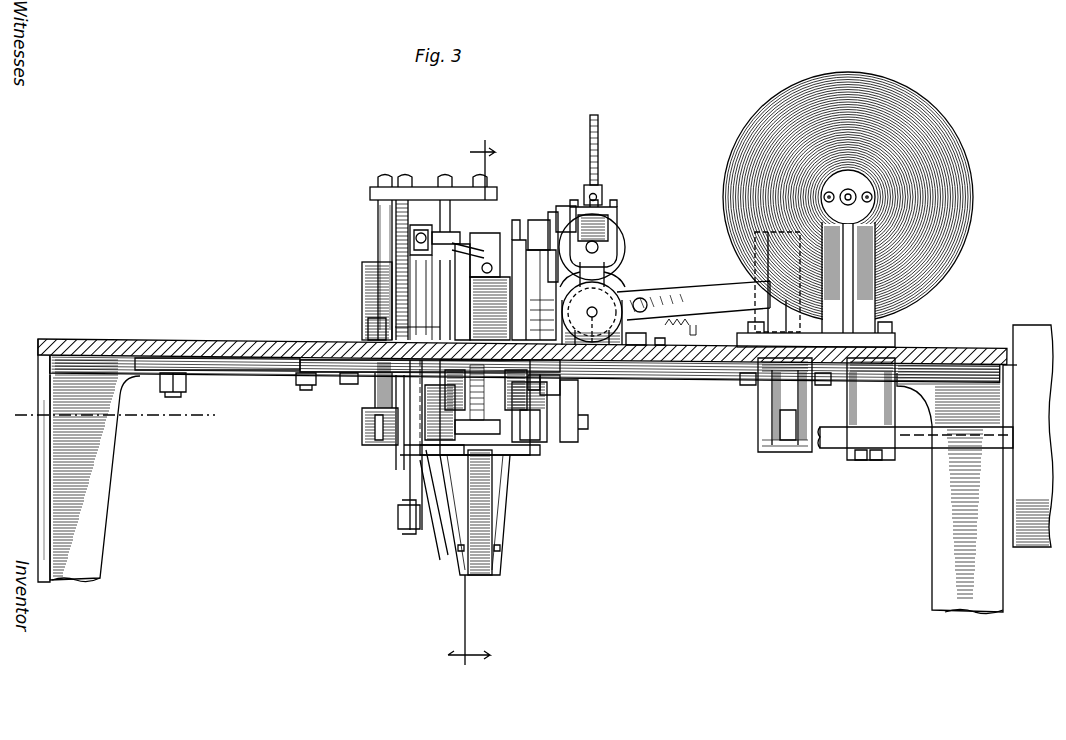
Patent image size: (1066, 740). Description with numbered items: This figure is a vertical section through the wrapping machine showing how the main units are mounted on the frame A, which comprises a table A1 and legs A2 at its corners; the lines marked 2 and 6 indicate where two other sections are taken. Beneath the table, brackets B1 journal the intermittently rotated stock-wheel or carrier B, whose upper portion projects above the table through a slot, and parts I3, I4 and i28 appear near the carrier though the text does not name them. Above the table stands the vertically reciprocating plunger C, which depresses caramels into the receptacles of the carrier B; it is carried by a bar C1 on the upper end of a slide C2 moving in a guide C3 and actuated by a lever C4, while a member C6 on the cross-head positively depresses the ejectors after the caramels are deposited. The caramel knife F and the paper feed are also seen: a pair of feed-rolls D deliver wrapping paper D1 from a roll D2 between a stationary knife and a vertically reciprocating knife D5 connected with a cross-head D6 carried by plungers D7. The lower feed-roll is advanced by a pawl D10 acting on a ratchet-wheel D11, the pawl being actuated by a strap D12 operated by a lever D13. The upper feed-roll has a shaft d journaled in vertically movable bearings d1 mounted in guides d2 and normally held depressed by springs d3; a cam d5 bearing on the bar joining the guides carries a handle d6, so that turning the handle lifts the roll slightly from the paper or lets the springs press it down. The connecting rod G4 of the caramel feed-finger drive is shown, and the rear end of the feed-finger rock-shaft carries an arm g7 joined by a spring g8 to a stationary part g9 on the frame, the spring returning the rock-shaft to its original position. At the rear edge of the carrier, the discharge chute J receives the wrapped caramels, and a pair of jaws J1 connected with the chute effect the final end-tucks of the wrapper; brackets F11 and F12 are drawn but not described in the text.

The frame A is at (35, 338).
The table A1 is at (205, 345).
The legs A2 is at (38, 458).
The section line 2 is at (18, 430).
The section line 6 is at (471, 407).
The rod I3 is at (248, 372).
The bolt I4 is at (306, 386).
The plunger C is at (495, 255).
The bar C1 is at (418, 190).
The slide C2 is at (376, 250).
The guide C3 is at (362, 292).
The lever C4 is at (365, 438).
The ejector-depressing member C6 is at (447, 235).
The connecting rod G4 is at (410, 232).
The arm g7 is at (466, 243).
The spring g8 is at (470, 260).
The stationary part g9 is at (400, 336).
The rotary stock-wheel B is at (478, 572).
The brackets B1 is at (408, 452).
The pin i28 is at (462, 550).
The caramel knife F is at (552, 230).
The bracket F11 is at (520, 335).
The bracket F12 is at (775, 400).
The feed-rolls D is at (618, 286).
The wrapping paper D1 is at (703, 293).
The paper roll D2 is at (975, 203).
The reciprocating knife D5 is at (530, 245).
The cross-head D6 is at (570, 215).
The plungers D7 is at (606, 272).
The pawl D10 is at (630, 388).
The ratchet-wheel D11 is at (579, 390).
The strap D12 is at (580, 402).
The lever D13 is at (560, 436).
The shaft d is at (598, 247).
The bearings d1 is at (600, 240).
The guides d2 is at (616, 230).
The springs d3 is at (612, 222).
The cam d5 is at (600, 196).
The handle d6 is at (598, 133).
The discharge chute J is at (908, 450).
The jaws J1 is at (1033, 436).